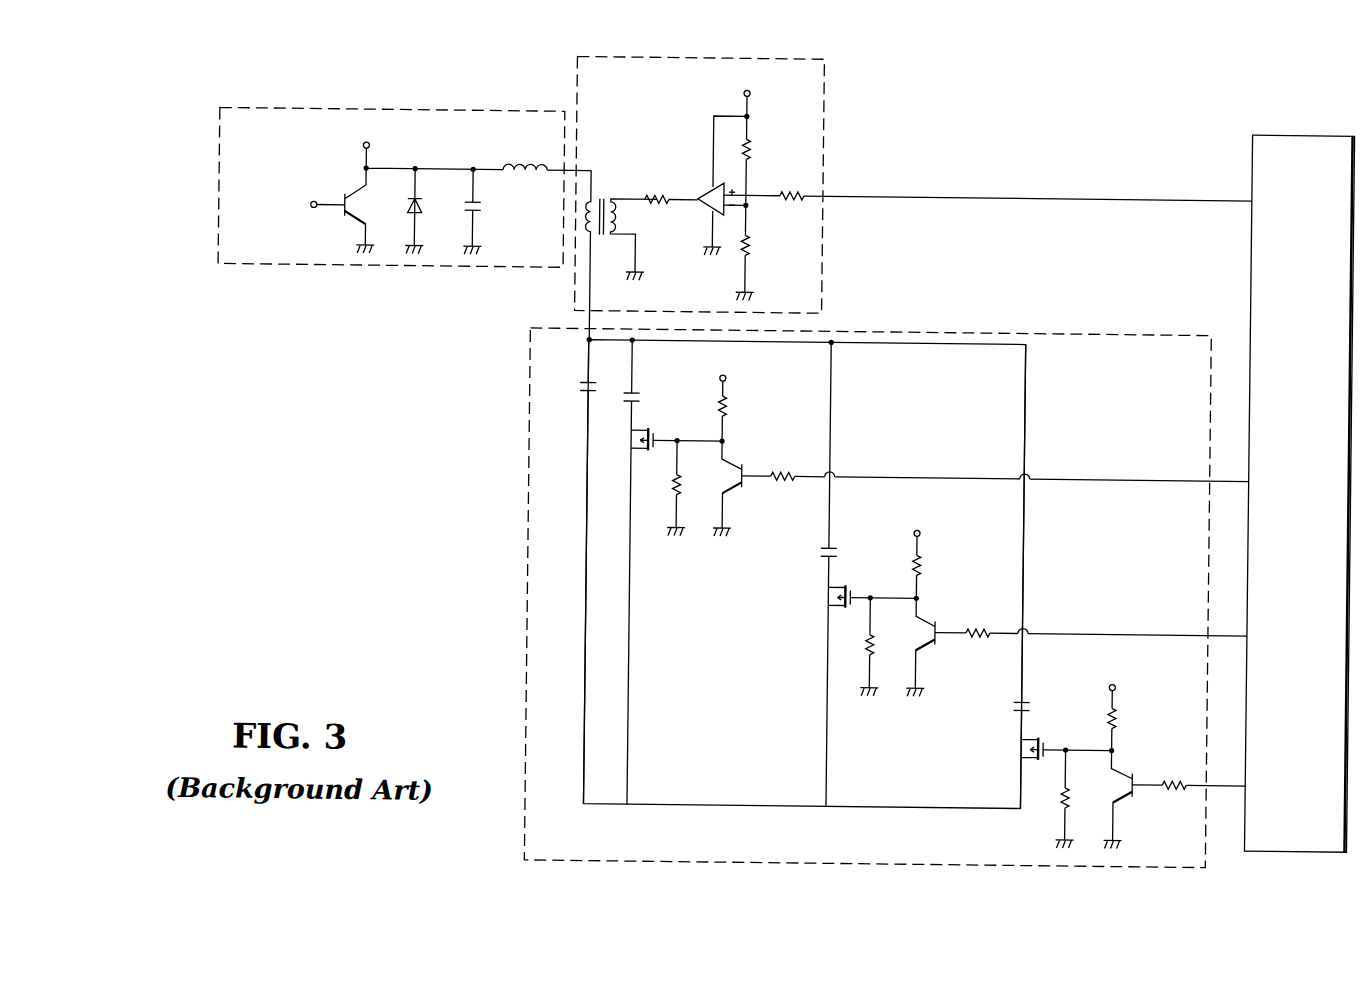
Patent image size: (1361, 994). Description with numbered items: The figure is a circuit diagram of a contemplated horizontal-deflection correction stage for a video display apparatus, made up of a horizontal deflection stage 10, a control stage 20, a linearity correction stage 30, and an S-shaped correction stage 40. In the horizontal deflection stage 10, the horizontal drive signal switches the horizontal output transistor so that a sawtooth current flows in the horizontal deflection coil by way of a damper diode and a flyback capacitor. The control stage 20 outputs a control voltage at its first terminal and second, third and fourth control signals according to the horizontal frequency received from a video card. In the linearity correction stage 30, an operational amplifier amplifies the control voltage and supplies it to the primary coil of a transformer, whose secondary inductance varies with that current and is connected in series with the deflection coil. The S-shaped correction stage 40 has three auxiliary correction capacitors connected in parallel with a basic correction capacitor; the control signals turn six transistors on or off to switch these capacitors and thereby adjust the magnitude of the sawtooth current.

The horizontal deflection stage 10 is at (388, 271).
The control stage 20 is at (1249, 167).
The linearity correction stage 30 is at (820, 268).
The S-shaped correction stage 40 is at (1071, 331).